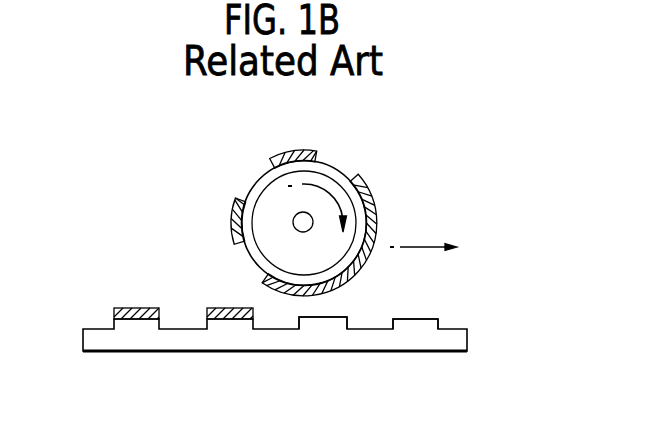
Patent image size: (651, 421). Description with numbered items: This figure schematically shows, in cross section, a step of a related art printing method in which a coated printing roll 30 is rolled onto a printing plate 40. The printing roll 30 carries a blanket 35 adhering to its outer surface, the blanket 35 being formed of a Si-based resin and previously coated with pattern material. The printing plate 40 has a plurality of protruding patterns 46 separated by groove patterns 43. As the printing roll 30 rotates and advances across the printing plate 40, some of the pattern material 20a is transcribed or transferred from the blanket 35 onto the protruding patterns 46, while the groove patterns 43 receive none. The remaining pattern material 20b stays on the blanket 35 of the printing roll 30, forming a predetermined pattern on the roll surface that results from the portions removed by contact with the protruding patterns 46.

The printing roll 30 is at (269, 200).
The blanket 35 is at (247, 224).
The remaining pattern material 20b is at (369, 178).
The transferred pattern material 20a is at (138, 311).
The printing plate 40 is at (468, 339).
The groove patterns 43 is at (372, 327).
The protruding patterns 46 is at (422, 320).